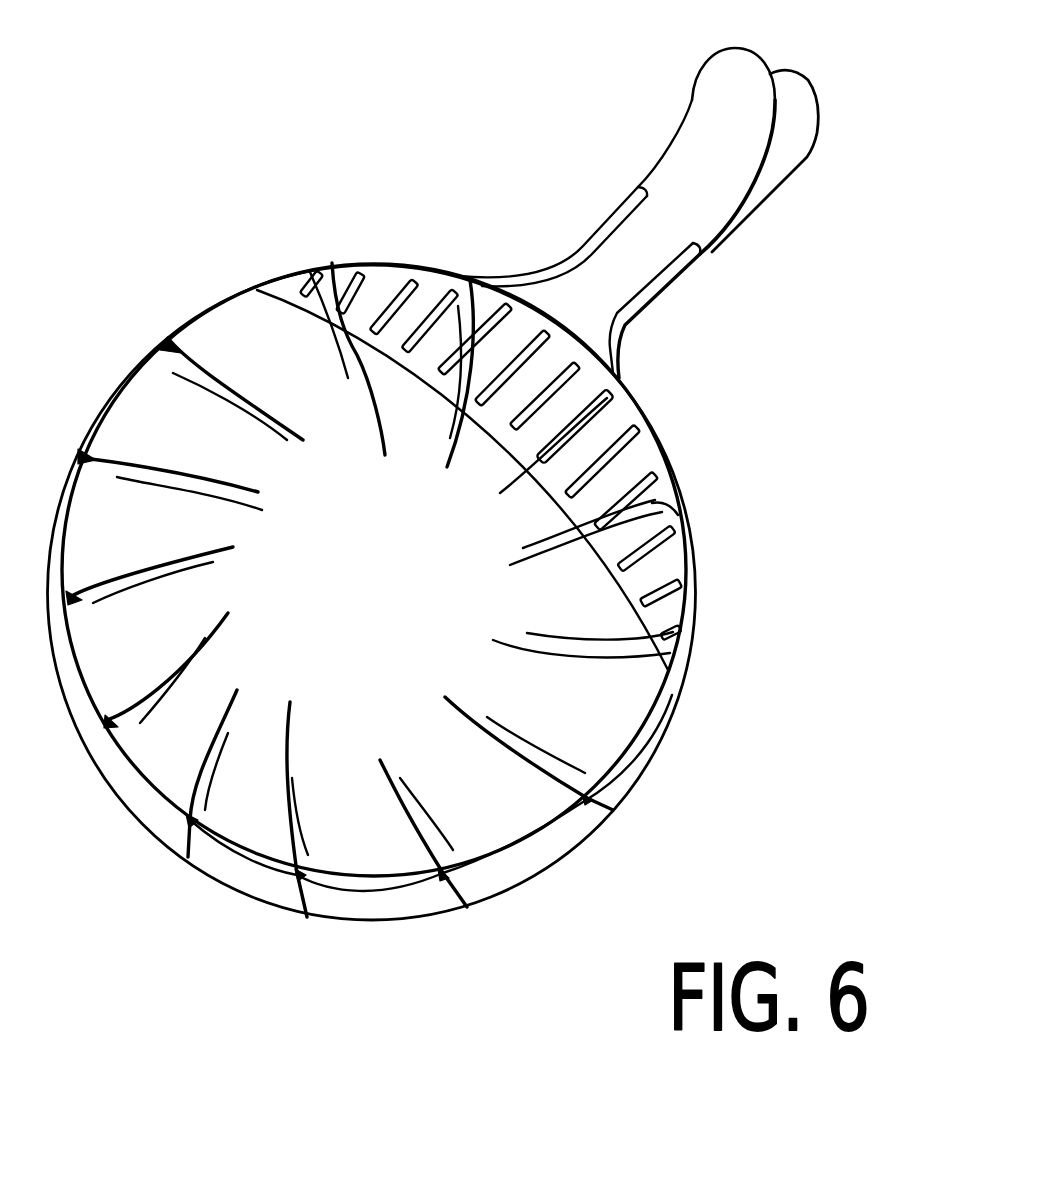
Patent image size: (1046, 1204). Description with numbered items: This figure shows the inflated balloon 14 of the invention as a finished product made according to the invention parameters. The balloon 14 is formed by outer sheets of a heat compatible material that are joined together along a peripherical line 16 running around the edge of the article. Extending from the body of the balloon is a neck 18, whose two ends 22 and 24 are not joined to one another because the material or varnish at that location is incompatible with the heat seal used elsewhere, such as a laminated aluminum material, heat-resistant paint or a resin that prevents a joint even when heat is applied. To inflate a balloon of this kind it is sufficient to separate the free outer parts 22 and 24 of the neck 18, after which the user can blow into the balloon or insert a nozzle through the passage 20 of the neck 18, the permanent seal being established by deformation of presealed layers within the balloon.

The balloon 14 is at (692, 383).
The peripherical line 16 is at (697, 608).
The neck 18 is at (594, 283).
The passage 20 is at (647, 263).
The end of neck 22 is at (732, 87).
The end of neck 24 is at (793, 118).